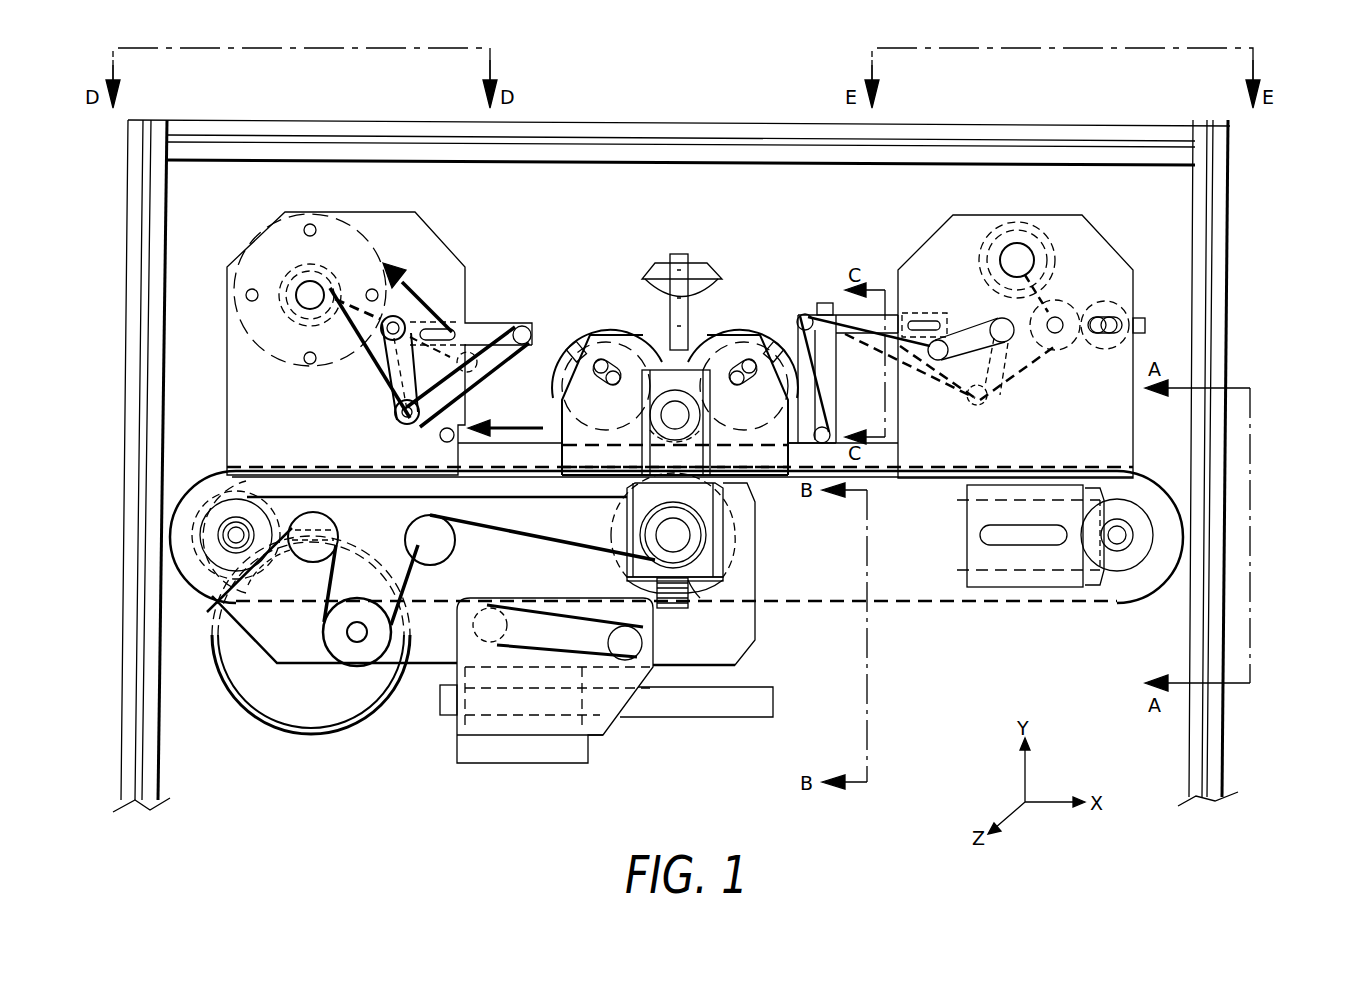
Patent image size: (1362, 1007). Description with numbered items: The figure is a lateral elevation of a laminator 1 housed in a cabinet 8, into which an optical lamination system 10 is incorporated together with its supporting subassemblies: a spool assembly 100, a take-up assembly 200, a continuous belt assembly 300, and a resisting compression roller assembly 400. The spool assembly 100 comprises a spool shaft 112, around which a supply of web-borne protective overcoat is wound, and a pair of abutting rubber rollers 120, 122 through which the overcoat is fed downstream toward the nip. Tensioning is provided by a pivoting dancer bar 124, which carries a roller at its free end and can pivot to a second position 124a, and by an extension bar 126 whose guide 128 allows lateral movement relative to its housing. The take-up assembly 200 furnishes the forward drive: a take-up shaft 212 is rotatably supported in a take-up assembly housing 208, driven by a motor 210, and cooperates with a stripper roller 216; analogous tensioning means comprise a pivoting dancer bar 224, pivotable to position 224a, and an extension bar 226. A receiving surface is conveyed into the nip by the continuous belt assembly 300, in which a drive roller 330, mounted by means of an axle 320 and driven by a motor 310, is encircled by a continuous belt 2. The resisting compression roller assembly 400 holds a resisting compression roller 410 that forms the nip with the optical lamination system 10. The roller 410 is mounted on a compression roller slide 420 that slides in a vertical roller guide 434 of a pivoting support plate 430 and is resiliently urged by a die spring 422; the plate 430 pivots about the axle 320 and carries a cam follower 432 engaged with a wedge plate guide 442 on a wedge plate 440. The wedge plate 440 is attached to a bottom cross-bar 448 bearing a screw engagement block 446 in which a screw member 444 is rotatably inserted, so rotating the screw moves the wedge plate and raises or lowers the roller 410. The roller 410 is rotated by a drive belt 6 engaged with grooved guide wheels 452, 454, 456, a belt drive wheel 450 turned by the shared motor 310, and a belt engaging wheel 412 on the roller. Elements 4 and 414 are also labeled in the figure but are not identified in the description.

The laminator 1 is at (1320, 136).
The continuous belt 2 is at (285, 466).
The link belt 4 is at (390, 394).
The drive belt 6 is at (338, 570).
The cabinet 8 is at (1228, 264).
The optical lamination system 10 is at (782, 230).
The spool assembly 100 is at (1023, 327).
The spool shaft 112 is at (1005, 264).
The rubber roller 120 is at (1064, 300).
The rubber roller 122 is at (1128, 300).
The pivoting dancer bar 124 is at (973, 330).
The second position 124a is at (1004, 392).
The extension bar 126 is at (862, 314).
The guide 128 is at (916, 320).
The take-up assembly 200 is at (396, 325).
The take-up assembly housing 208 is at (228, 272).
The motor 210 is at (352, 222).
The take-up shaft 212 is at (305, 292).
The stripper roller 216 is at (440, 436).
The pivoting dancer bar 224 is at (392, 372).
The position 224a is at (470, 346).
The extension bar 226 is at (530, 332).
The continuous belt assembly 300 is at (628, 563).
The motor 310 is at (280, 722).
The axle 320 is at (230, 536).
The drive roller 330 is at (272, 574).
The resisting compression roller assembly 400 is at (513, 635).
The resisting compression roller 410 is at (745, 542).
The belt engaging wheel 412 is at (704, 510).
The cutter shaft 414 is at (660, 532).
The compression roller slide 420 is at (705, 565).
The die spring 422 is at (666, 596).
The pivoting support plate 430 is at (750, 660).
The cam follower 432 is at (620, 634).
The vertical roller guide 434 is at (726, 600).
The wedge plate 440 is at (604, 737).
The wedge plate guide 442 is at (516, 585).
The screw member 444 is at (705, 718).
The screw engagement block 446 is at (463, 727).
The bottom cross-bar 448 is at (548, 764).
The belt drive wheel 450 is at (214, 506).
The grooved guide wheel 452 is at (316, 513).
The grooved guide wheel 454 is at (345, 638).
The grooved guide wheel 456 is at (455, 546).